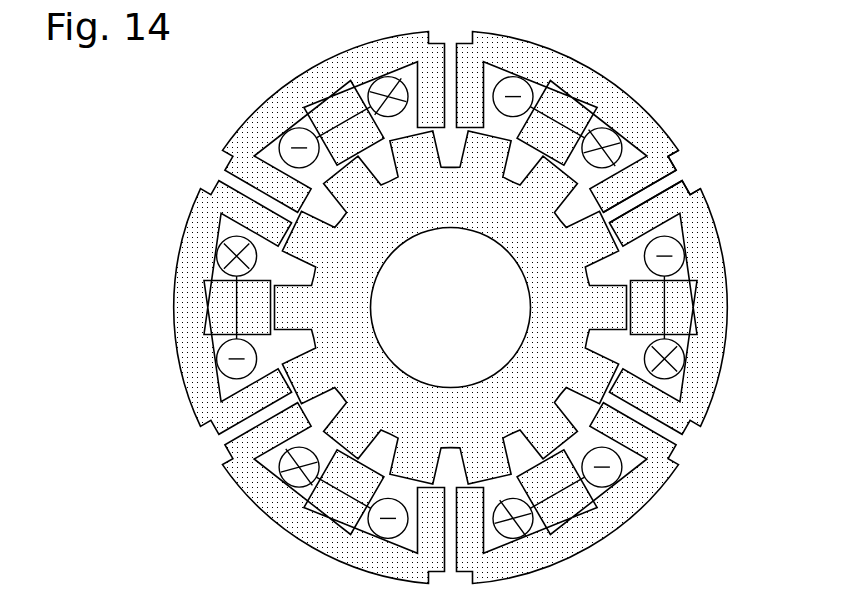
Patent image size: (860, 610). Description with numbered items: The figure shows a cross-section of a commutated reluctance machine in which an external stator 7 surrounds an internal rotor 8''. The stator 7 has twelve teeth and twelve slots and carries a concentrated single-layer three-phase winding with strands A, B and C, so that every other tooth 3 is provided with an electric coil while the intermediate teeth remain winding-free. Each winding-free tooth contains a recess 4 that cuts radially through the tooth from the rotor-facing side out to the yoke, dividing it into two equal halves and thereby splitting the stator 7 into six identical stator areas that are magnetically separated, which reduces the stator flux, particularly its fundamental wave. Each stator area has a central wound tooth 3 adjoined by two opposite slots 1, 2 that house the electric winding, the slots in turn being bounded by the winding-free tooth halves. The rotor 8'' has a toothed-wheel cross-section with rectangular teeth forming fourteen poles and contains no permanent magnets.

The slot 1 is at (677, 232).
The slot 2 is at (679, 397).
The tooth 3 is at (698, 288).
The recess 4 is at (655, 192).
The stator 7 is at (547, 65).
The rotor 8'' is at (451, 307).